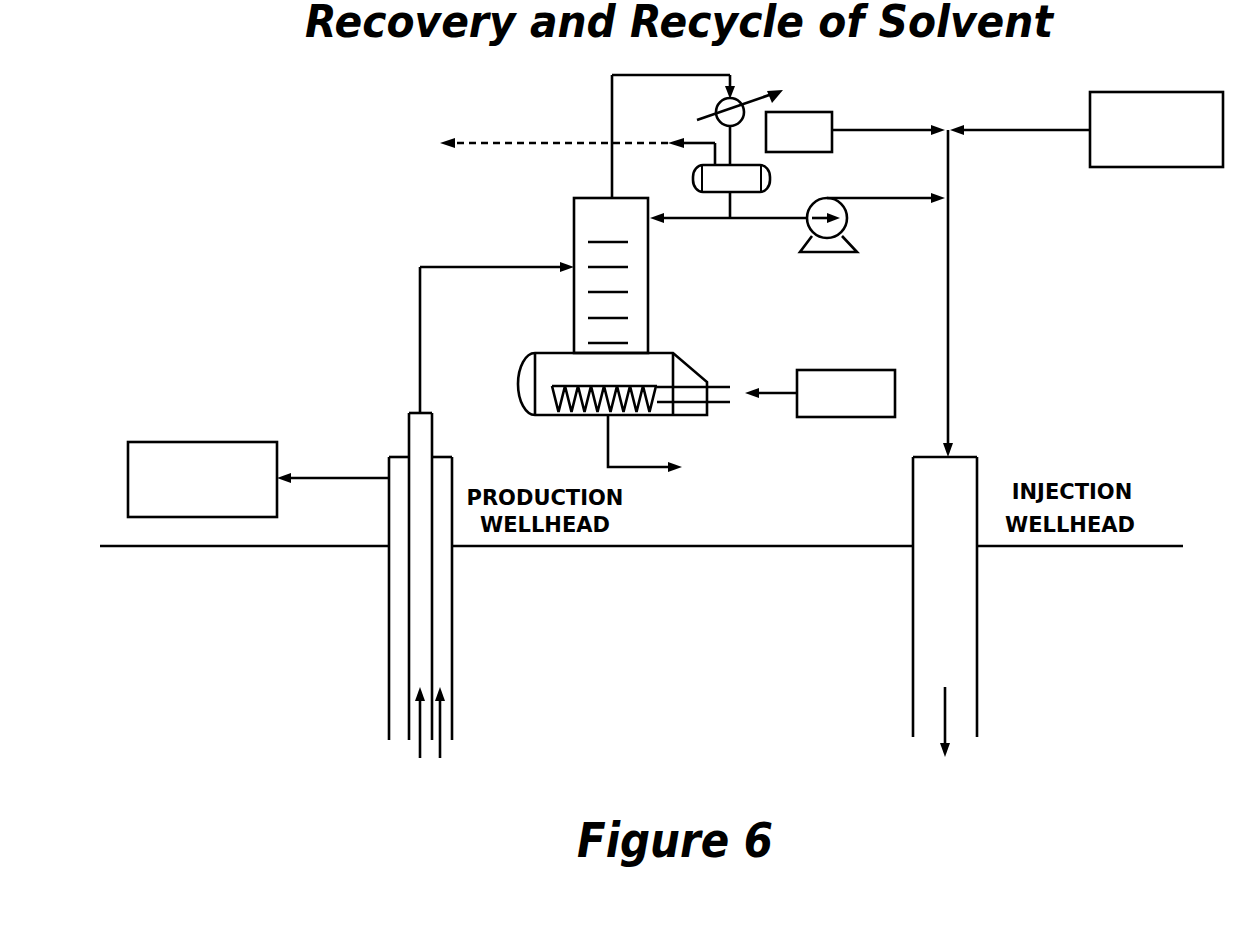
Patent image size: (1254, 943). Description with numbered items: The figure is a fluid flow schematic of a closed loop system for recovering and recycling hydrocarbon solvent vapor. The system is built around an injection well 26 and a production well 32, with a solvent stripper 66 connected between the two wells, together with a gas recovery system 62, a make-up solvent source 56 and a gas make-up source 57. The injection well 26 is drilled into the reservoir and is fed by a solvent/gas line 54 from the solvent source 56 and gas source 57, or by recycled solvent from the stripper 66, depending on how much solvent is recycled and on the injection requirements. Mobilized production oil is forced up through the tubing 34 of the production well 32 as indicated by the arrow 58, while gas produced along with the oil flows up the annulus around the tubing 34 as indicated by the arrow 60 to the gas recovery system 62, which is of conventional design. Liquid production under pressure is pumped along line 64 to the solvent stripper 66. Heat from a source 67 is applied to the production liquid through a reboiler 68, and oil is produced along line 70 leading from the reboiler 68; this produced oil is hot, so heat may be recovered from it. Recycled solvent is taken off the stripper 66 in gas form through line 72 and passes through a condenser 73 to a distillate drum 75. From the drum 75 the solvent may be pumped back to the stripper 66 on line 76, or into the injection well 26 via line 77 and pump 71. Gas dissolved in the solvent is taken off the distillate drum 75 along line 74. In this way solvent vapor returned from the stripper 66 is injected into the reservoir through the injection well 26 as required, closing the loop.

The injection well 26 is at (977, 617).
The production well 32 is at (388, 613).
The tubing 34 is at (433, 645).
The solvent/gas line 54 is at (948, 292).
The make-up solvent source 56 is at (1163, 167).
The gas make-up source 57 is at (800, 112).
The arrow 58 is at (406, 749).
The arrow 60 is at (457, 749).
The gas recovery system 62 is at (190, 442).
The line 64 is at (423, 353).
The solvent stripper 66 is at (572, 223).
The heat source 67 is at (847, 370).
The reboiler 68 is at (687, 367).
The line 70 is at (643, 463).
The pump 71 is at (847, 222).
The line 72 is at (612, 112).
The condenser 73 is at (718, 108).
The line 74 is at (520, 145).
The distillate drum 75 is at (693, 178).
The line 76 is at (705, 218).
The line 77 is at (768, 218).